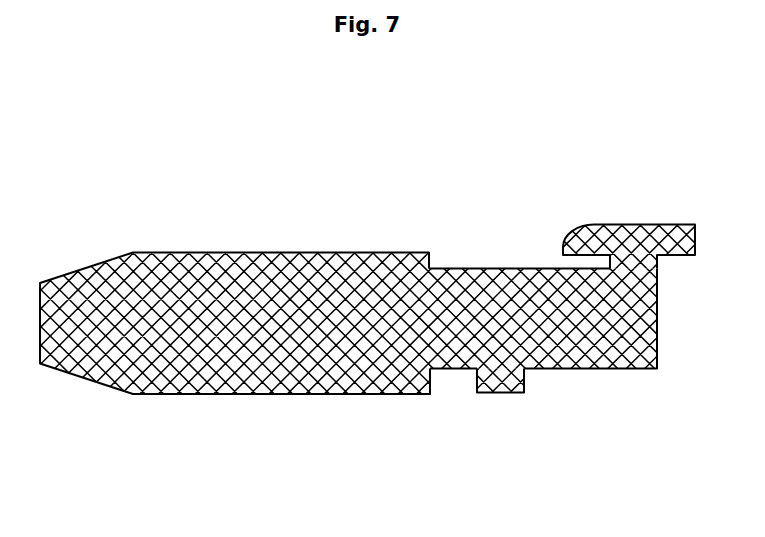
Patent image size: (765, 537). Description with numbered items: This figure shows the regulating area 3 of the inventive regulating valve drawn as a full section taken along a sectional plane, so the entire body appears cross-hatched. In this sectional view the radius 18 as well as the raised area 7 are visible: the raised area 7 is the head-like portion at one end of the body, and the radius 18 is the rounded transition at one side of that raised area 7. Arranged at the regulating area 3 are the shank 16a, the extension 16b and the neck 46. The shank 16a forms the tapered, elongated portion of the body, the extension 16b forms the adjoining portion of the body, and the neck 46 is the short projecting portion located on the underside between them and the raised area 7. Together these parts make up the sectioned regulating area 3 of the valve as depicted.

The regulating area 3 is at (194, 164).
The raised area 7 is at (667, 235).
The shank 16a is at (167, 395).
The extension 16b is at (542, 308).
The radius 18 is at (577, 235).
The neck 46 is at (512, 378).